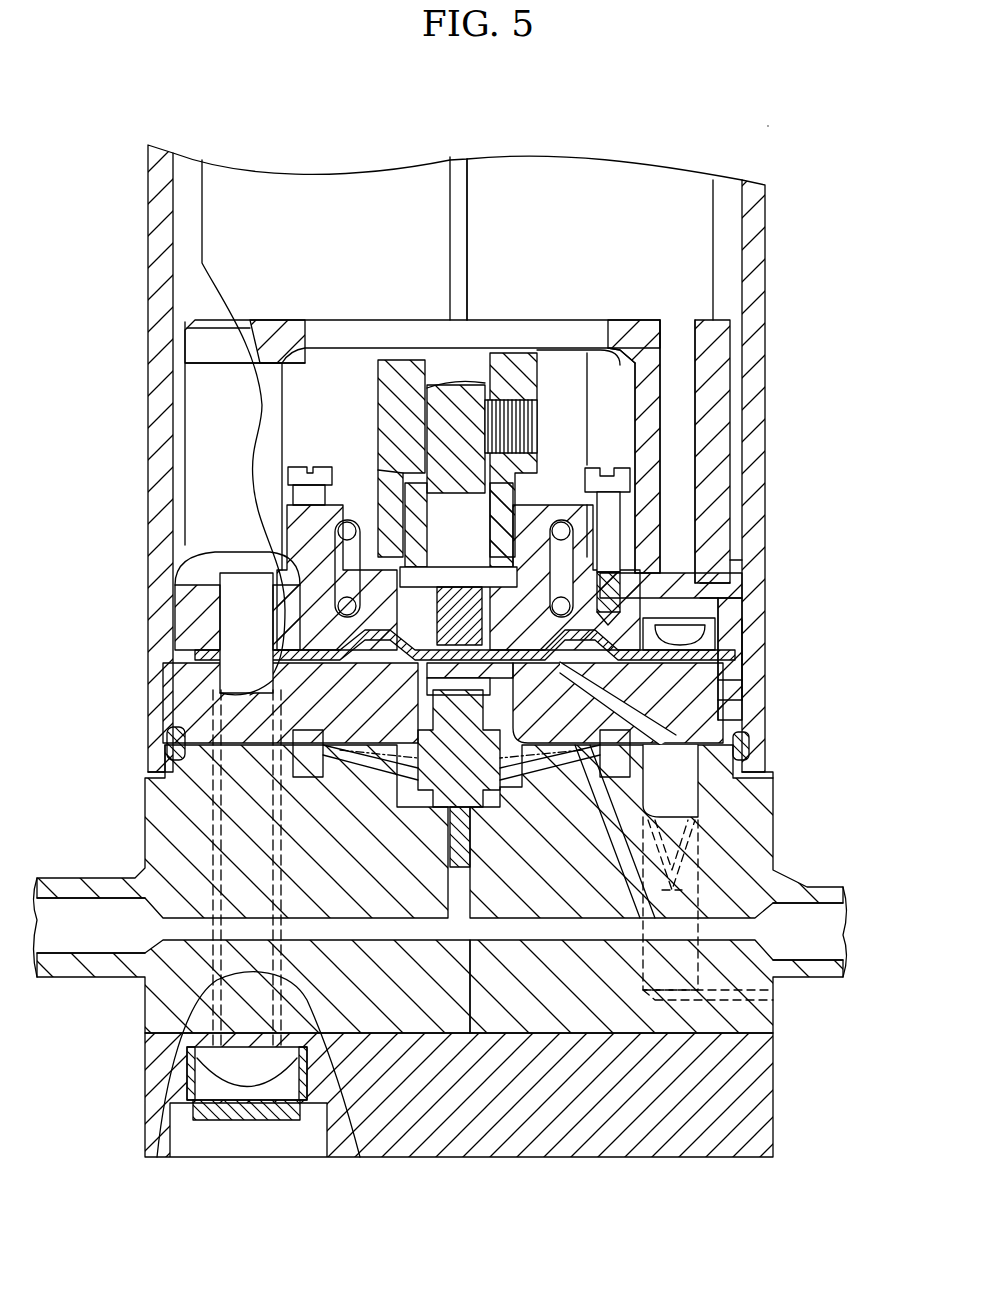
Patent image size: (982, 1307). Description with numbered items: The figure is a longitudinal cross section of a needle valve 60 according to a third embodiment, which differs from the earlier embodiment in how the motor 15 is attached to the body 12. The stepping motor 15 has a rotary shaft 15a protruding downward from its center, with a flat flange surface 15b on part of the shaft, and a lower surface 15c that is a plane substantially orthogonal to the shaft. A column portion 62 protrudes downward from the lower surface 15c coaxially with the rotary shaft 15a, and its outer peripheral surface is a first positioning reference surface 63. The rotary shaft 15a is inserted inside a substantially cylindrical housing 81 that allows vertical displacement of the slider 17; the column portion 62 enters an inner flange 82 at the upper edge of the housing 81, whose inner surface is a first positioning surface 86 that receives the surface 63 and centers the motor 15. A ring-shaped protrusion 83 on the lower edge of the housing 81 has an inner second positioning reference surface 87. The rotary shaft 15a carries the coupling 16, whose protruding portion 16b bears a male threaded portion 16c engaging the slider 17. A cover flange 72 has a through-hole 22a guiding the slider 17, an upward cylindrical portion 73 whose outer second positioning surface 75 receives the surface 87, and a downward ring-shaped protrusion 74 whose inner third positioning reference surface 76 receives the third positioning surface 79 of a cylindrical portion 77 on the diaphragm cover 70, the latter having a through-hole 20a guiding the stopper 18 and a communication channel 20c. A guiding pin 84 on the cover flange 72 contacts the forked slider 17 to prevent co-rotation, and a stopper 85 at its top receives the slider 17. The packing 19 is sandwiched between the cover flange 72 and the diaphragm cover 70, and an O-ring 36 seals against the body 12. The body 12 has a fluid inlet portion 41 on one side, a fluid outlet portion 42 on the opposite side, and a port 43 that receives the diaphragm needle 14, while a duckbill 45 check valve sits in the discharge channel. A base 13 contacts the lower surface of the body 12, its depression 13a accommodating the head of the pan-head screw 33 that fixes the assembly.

The needle valve 60 is at (768, 126).
The motor 15 is at (688, 218).
The rotary shaft 15a is at (455, 388).
The flat flange surface 15b is at (507, 420).
The lower surface 15c is at (640, 322).
The coupling 16 is at (540, 360).
The protruding portion 16b is at (410, 545).
The male threaded portion 16c is at (386, 463).
The slider 17 is at (300, 530).
The stopper 18 is at (410, 690).
The packing 19 is at (340, 650).
The through-hole 20a is at (405, 722).
The communication channel 20c is at (722, 722).
The through-hole 22a is at (420, 640).
The column portion 62 is at (578, 322).
The first positioning reference surface 63 is at (618, 318).
The diaphragm cover 70 is at (735, 718).
The cover flange 72 is at (738, 622).
The cylindrical portion 73 is at (715, 530).
The ring-shaped protrusion 74 is at (735, 662).
The second positioning surface 75 is at (728, 568).
The third positioning reference surface 76 is at (740, 640).
The cylindrical portion 77 is at (720, 702).
The third positioning surface 79 is at (735, 685).
The housing 81 is at (720, 405).
The inner flange 82 is at (632, 352).
The ring-shaped protrusion 83 is at (738, 580).
The guiding pin 84 is at (598, 502).
The stopper 85 is at (597, 475).
The first positioning surface 86 is at (608, 340).
The second positioning reference surface 87 is at (735, 598).
The O-ring 36 is at (750, 760).
The body 12 is at (140, 812).
The base 13 is at (580, 1138).
The depression 13a is at (295, 1087).
The diaphragm needle 14 is at (505, 820).
The pan-head screw 33 is at (245, 1080).
The fluid inlet portion 41 is at (92, 935).
The fluid outlet portion 42 is at (812, 943).
The port 43 is at (413, 830).
The duckbill 45 is at (700, 783).